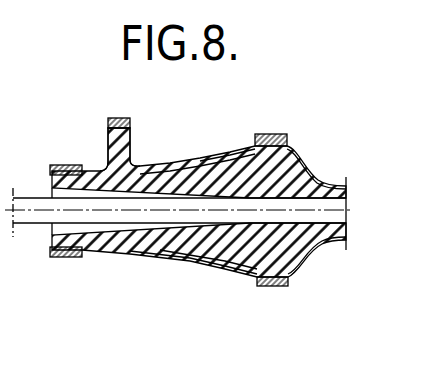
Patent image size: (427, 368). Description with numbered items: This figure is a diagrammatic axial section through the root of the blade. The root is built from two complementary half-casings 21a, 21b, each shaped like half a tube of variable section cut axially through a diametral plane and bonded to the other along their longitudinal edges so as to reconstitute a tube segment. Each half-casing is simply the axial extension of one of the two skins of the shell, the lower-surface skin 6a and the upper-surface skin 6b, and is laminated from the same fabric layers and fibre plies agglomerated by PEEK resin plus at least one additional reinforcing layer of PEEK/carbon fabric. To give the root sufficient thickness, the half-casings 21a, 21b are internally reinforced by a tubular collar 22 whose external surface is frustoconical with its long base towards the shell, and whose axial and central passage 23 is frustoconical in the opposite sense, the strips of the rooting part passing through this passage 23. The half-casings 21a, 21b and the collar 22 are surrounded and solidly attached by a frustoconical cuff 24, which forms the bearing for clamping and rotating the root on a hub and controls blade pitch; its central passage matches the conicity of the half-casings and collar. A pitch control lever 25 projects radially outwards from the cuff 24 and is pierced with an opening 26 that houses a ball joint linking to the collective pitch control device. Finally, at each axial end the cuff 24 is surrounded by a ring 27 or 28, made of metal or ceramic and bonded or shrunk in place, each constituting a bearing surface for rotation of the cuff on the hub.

The lower-surface skin 6a is at (318, 245).
The upper-surface skin 6b is at (317, 181).
The half-casing 21a is at (202, 261).
The half-casing 21b is at (237, 153).
The tubular collar 22 is at (257, 277).
The axial and central passage 23 is at (97, 236).
The cuff 24 is at (202, 160).
The pitch control lever 25 is at (110, 119).
The opening 26 is at (131, 128).
The ring 27 is at (269, 134).
The ring 28 is at (62, 165).